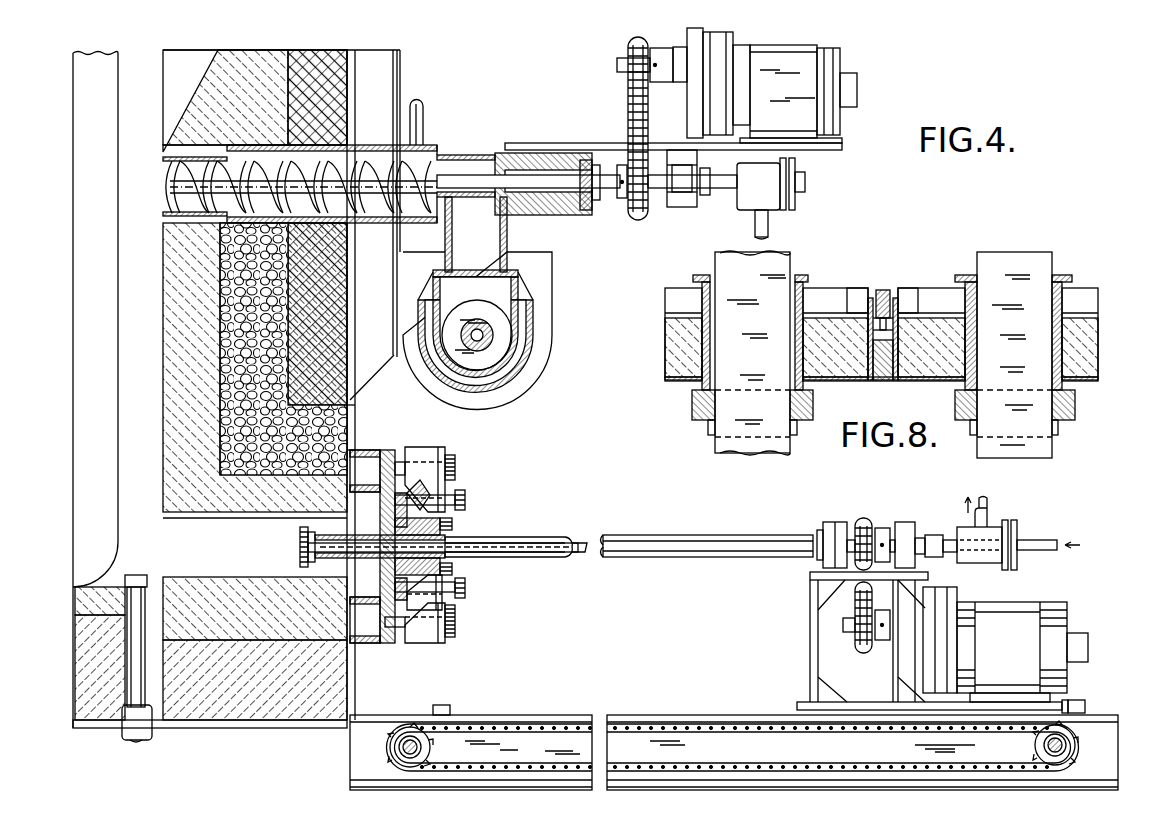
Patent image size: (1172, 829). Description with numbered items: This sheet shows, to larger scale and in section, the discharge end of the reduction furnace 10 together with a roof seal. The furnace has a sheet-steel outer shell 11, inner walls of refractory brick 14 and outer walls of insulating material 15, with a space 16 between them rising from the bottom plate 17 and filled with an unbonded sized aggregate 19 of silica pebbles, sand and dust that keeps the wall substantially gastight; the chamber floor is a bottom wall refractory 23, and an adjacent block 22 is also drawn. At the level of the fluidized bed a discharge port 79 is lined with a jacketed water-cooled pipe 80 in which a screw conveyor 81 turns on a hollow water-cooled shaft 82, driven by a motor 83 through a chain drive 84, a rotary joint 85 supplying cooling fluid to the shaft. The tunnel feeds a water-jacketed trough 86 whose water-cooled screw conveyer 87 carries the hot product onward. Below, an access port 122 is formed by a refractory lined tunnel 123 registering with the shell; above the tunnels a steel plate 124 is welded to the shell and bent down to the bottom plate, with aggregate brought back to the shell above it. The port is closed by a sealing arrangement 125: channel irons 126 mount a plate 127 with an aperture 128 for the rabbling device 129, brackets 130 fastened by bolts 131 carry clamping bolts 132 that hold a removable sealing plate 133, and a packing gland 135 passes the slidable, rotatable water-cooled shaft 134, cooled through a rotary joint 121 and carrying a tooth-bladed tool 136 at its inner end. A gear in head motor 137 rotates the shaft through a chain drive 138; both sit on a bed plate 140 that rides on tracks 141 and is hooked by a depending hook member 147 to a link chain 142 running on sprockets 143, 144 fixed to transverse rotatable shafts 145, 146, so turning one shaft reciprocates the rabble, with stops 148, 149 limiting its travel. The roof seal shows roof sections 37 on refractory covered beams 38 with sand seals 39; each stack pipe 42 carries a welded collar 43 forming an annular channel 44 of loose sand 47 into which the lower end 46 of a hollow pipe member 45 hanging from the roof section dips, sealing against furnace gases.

In FIG. 4, the reduction furnace 10 is at (406, 82).
In FIG. 4, the outer shell 11 is at (350, 433).
In FIG. 4, the refractory brick 14 is at (178, 312).
In FIG. 4, the insulating material 15 is at (312, 60).
In FIG. 4, the space 16 is at (218, 265).
In FIG. 4, the bottom plate 17 is at (242, 728).
In FIG. 4, the sized aggregate 19 is at (235, 358).
In FIG. 4, the base block 22 is at (80, 662).
In FIG. 4, the bottom wall refractory 23 is at (80, 600).
In FIG. 8, the roof section 37 is at (830, 330).
In FIG. 8, the transverse refractory covered beam 38 is at (902, 322).
In FIG. 8, the sand seal 39 is at (884, 294).
In FIG. 8, the pipe 42 is at (751, 454).
In FIG. 8, the collar 43 is at (692, 410).
In FIG. 8, the annular channel 44 is at (812, 406).
In FIG. 8, the hollow pipe member 45 is at (695, 384).
In FIG. 8, the lower end 46 is at (797, 426).
In FIG. 8, the loose sand 47 is at (709, 426).
In FIG. 4, the discharge port 79 is at (190, 162).
In FIG. 4, the jacketed water-cooled pipe 80 is at (423, 134).
In FIG. 4, the screw conveyor 81 is at (441, 162).
In FIG. 4, the hollow water-cooled shaft 82 is at (563, 175).
In FIG. 4, the motor 83 is at (783, 60).
In FIG. 4, the chain drive 84 is at (629, 121).
In FIG. 4, the rotary joint 85 is at (752, 196).
In FIG. 4, the water-jacketed trough 86 is at (520, 362).
In FIG. 4, the water-cooled screw conveyer 87 is at (492, 333).
In FIG. 4, the rotary joint 121 is at (1030, 539).
In FIG. 4, the access port 122 is at (326, 562).
In FIG. 4, the refractory lined tunnel 123 is at (345, 452).
In FIG. 4, the steel plate 124 is at (344, 430).
In FIG. 4, the sealing arrangement 125 is at (471, 490).
In FIG. 4, the channel iron 126 is at (366, 496).
In FIG. 4, the plate 127 is at (392, 645).
In FIG. 4, the aperture 128 is at (419, 594).
In FIG. 4, the rabbling device 129 is at (541, 535).
In FIG. 4, the bracket 130 is at (430, 455).
In FIG. 4, the bolt 131 is at (442, 620).
In FIG. 4, the clamping bolt 132 is at (466, 500).
In FIG. 4, the removable sealing plate 133 is at (410, 515).
In FIG. 4, the water-cooled shaft 134 is at (688, 550).
In FIG. 4, the packing gland 135 is at (470, 540).
In FIG. 4, the tooth-bladed tool 136 is at (300, 543).
In FIG. 4, the gear in head motor 137 is at (1028, 610).
In FIG. 4, the chain drive 138 is at (860, 655).
In FIG. 4, the bed plate 140 is at (1066, 702).
In FIG. 4, the tracks 141 is at (652, 716).
In FIG. 4, the link chain 142 is at (523, 727).
In FIG. 4, the sprocket 143 is at (1035, 745).
In FIG. 4, the sprocket 144 is at (430, 748).
In FIG. 4, the transverse rotatable shaft 145 is at (1077, 745).
In FIG. 4, the transverse rotatable shaft 146 is at (396, 751).
In FIG. 4, the depending hook member 147 is at (797, 709).
In FIG. 4, the stop 148 is at (1086, 705).
In FIG. 4, the stop 149 is at (433, 708).